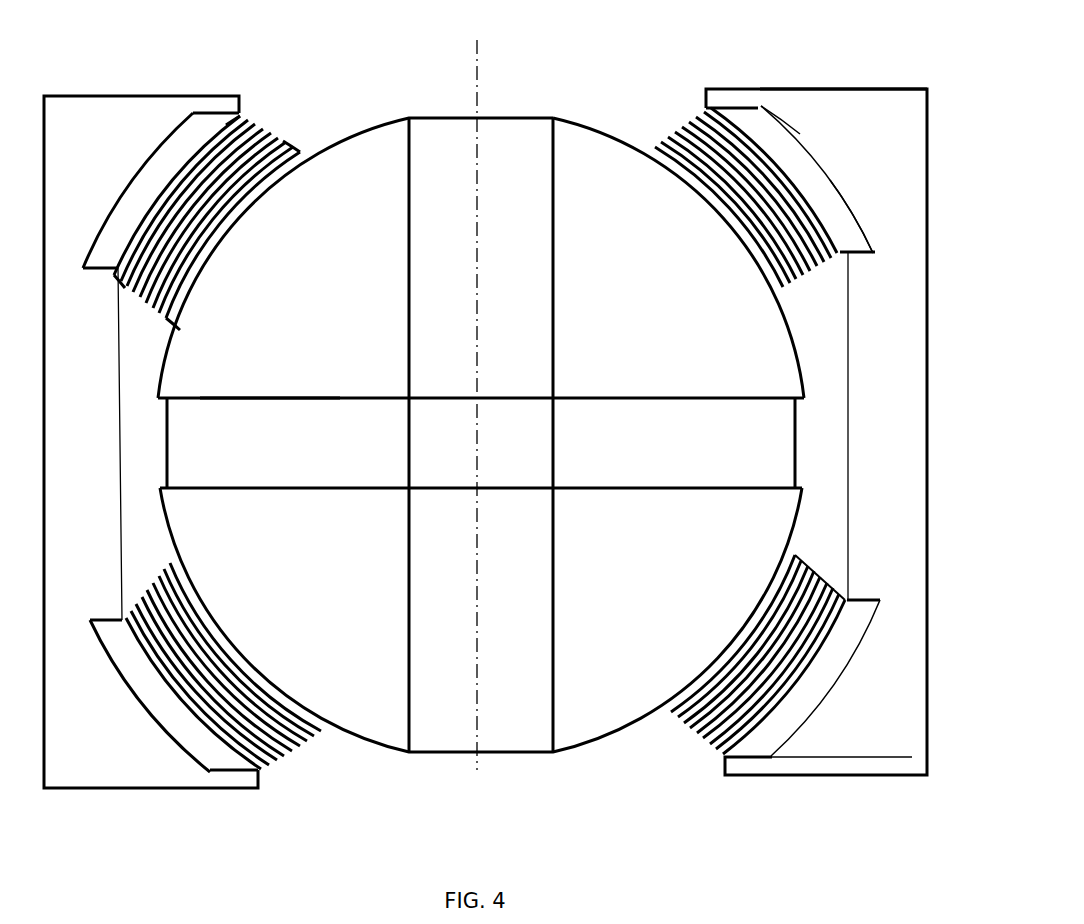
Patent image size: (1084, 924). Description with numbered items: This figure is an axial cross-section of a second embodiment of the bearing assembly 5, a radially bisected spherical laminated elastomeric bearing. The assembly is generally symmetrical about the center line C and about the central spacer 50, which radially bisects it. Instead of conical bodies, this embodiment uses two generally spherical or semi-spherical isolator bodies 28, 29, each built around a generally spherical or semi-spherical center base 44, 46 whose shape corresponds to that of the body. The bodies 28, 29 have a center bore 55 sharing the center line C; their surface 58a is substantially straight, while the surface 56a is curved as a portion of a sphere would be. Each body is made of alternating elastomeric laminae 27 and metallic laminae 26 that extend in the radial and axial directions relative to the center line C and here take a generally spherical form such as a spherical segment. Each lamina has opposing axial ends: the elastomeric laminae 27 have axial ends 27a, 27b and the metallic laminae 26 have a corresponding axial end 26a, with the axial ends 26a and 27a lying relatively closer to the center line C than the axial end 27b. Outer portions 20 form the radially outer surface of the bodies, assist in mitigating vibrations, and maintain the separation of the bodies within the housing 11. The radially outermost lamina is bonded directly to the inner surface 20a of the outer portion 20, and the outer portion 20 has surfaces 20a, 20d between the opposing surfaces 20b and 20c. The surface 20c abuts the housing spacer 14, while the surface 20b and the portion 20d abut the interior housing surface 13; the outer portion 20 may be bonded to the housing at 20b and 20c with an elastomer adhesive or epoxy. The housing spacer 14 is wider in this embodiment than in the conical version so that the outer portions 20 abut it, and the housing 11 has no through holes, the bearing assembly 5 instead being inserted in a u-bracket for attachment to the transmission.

The bearing assembly 5 is at (827, 69).
The housing 11 is at (852, 88).
The interior housing surface 13 is at (168, 135).
The housing spacer 14 is at (863, 345).
The outer portion 20 is at (800, 177).
The inner surface of outer portion 20a is at (830, 237).
The surface of outer portion 20b is at (732, 108).
The surface of outer portion 20c is at (862, 255).
The surface of outer portion 20d is at (770, 120).
The metallic laminae 26 is at (310, 742).
The axial end of metallic lamina 26a is at (288, 137).
The elastomeric laminae 27 is at (278, 753).
The axial end of elastomeric lamina 27a is at (260, 115).
The axial end of elastomeric lamina 27b is at (147, 290).
The semi-spherical isolator body 28 is at (664, 114).
The semi-spherical isolator body 29 is at (673, 747).
The center base 44 is at (352, 133).
The center base 46 is at (393, 755).
The central spacer 50 is at (797, 430).
The center bore 55 is at (415, 177).
The curved surface 56a is at (580, 118).
The straight surface 58a is at (270, 398).
The center line C is at (484, 48).